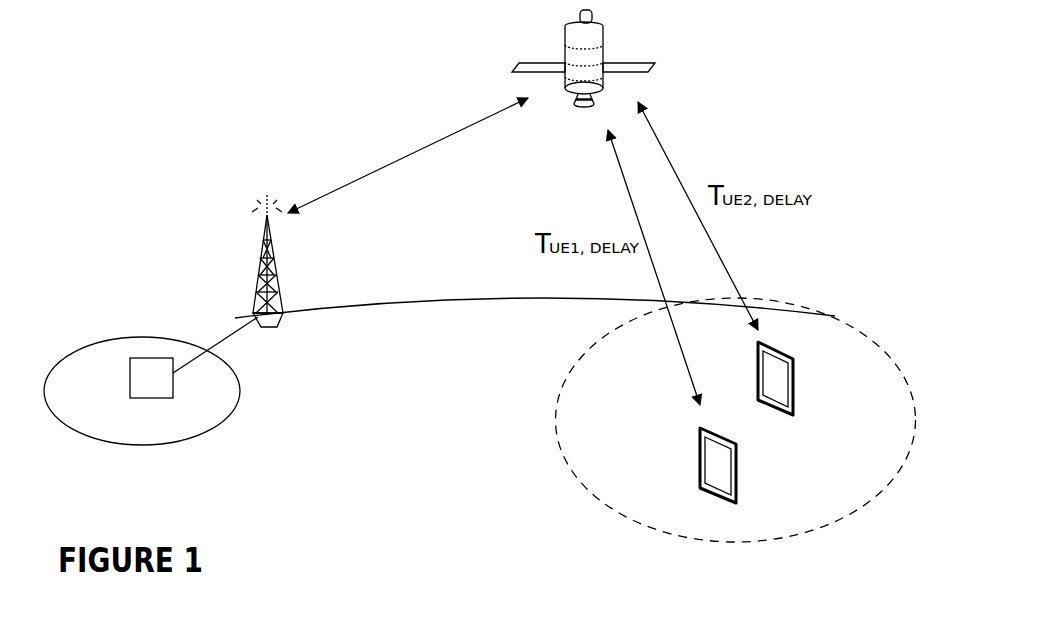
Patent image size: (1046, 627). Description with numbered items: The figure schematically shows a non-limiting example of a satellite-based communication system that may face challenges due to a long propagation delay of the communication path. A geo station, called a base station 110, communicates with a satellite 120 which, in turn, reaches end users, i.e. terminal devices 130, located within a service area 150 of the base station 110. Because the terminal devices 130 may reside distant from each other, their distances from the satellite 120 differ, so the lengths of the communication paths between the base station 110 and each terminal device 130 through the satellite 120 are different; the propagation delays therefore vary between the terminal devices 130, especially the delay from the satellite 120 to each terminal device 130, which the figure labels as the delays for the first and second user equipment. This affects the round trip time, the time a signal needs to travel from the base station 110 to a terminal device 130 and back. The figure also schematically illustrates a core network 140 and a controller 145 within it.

The base station 110 is at (258, 302).
The satellite 120 is at (633, 63).
The terminal devices 130 is at (700, 455).
The core network 140 is at (105, 338).
The controller 145 is at (130, 375).
The service area 150 is at (898, 367).